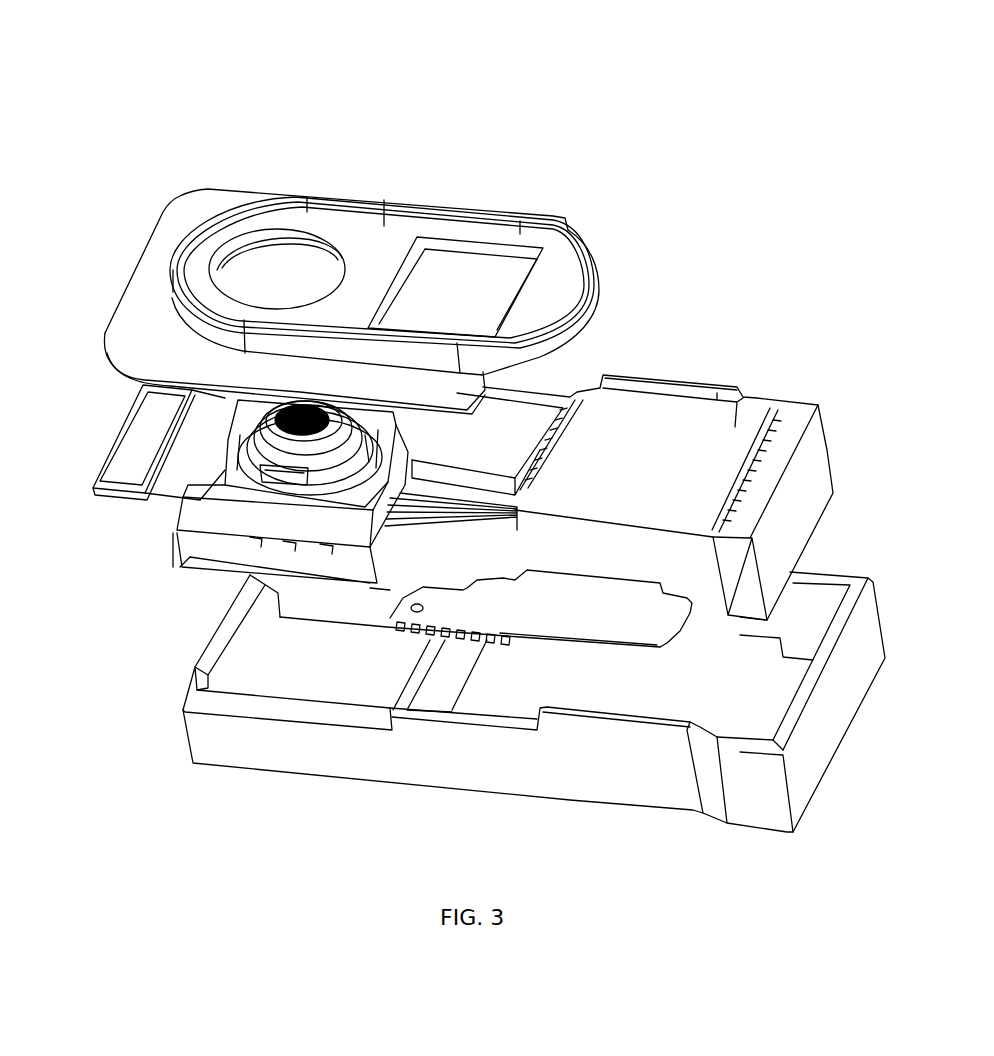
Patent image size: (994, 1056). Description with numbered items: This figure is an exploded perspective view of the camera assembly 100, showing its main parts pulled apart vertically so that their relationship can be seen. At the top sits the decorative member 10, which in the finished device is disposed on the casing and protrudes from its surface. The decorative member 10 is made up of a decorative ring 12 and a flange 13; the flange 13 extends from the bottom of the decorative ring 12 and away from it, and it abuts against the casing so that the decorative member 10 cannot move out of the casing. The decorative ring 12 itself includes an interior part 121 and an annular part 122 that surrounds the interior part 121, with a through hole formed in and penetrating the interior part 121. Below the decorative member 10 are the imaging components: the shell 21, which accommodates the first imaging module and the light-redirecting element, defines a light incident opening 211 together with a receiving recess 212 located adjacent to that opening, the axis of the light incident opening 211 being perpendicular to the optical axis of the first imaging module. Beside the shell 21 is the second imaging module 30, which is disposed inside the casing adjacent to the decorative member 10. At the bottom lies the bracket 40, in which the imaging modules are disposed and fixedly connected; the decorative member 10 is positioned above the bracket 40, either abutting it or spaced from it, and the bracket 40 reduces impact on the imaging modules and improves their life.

The camera assembly 100 is at (118, 196).
The decorative member 10 is at (437, 62).
The decorative ring 12 is at (490, 120).
The flange 13 is at (212, 200).
The interior part 121 is at (383, 201).
The annular part 122 is at (434, 215).
The shell 21 is at (743, 394).
The light incident opening 211 is at (517, 418).
The receiving recess 212 is at (482, 517).
The second imaging module 30 is at (227, 517).
The bracket 40 is at (480, 770).